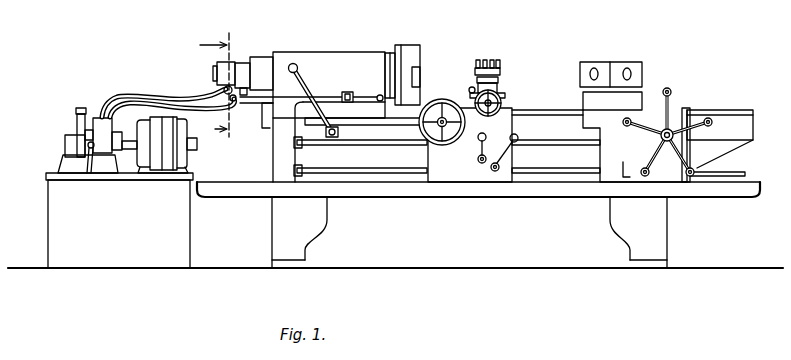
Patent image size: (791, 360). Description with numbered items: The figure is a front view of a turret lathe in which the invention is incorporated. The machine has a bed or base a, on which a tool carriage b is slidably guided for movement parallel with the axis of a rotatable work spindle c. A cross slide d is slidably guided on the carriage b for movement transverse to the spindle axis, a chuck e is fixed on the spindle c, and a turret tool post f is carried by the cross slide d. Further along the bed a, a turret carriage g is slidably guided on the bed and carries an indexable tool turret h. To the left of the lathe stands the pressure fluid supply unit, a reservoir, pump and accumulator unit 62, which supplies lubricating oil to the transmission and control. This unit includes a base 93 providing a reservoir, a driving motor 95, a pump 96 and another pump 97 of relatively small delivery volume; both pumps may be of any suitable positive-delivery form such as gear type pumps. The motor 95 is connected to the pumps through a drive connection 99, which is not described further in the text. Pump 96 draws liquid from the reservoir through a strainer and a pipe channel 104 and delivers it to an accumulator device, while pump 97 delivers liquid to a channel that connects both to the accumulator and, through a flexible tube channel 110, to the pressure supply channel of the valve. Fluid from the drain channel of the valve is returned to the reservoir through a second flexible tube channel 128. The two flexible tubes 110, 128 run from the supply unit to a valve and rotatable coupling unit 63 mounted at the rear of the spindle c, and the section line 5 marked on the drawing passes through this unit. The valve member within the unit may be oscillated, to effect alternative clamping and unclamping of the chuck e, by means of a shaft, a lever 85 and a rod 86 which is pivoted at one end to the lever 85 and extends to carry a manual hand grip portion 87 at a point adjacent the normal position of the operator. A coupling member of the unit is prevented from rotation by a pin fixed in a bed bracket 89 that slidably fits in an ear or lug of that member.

The base 93 is at (70, 210).
The driving motor 95 is at (162, 146).
The coupling 99 is at (114, 150).
The pump 97 is at (78, 126).
The reservoir, pump and accumulator unit 62 is at (84, 106).
The pump 96 is at (65, 150).
The pipe channel 104 is at (89, 172).
The flexible tube channel 110 is at (126, 96).
The flexible tube channel 128 is at (156, 102).
The section line 5- 5 is at (207, 88).
The valve and rotatable coupling unit 63 is at (210, 65).
The lever 85 is at (258, 62).
The bed bracket 89 is at (268, 116).
The rod 86 is at (330, 96).
The manual hand grip portion 87 is at (379, 95).
The work spindle c is at (390, 52).
The chuck e is at (406, 58).
The tool carriage b is at (503, 120).
The turret tool post f is at (501, 68).
The cross slide d is at (506, 100).
The bed a is at (540, 110).
The indexable tool turret h is at (621, 62).
The turret carriage g is at (646, 120).